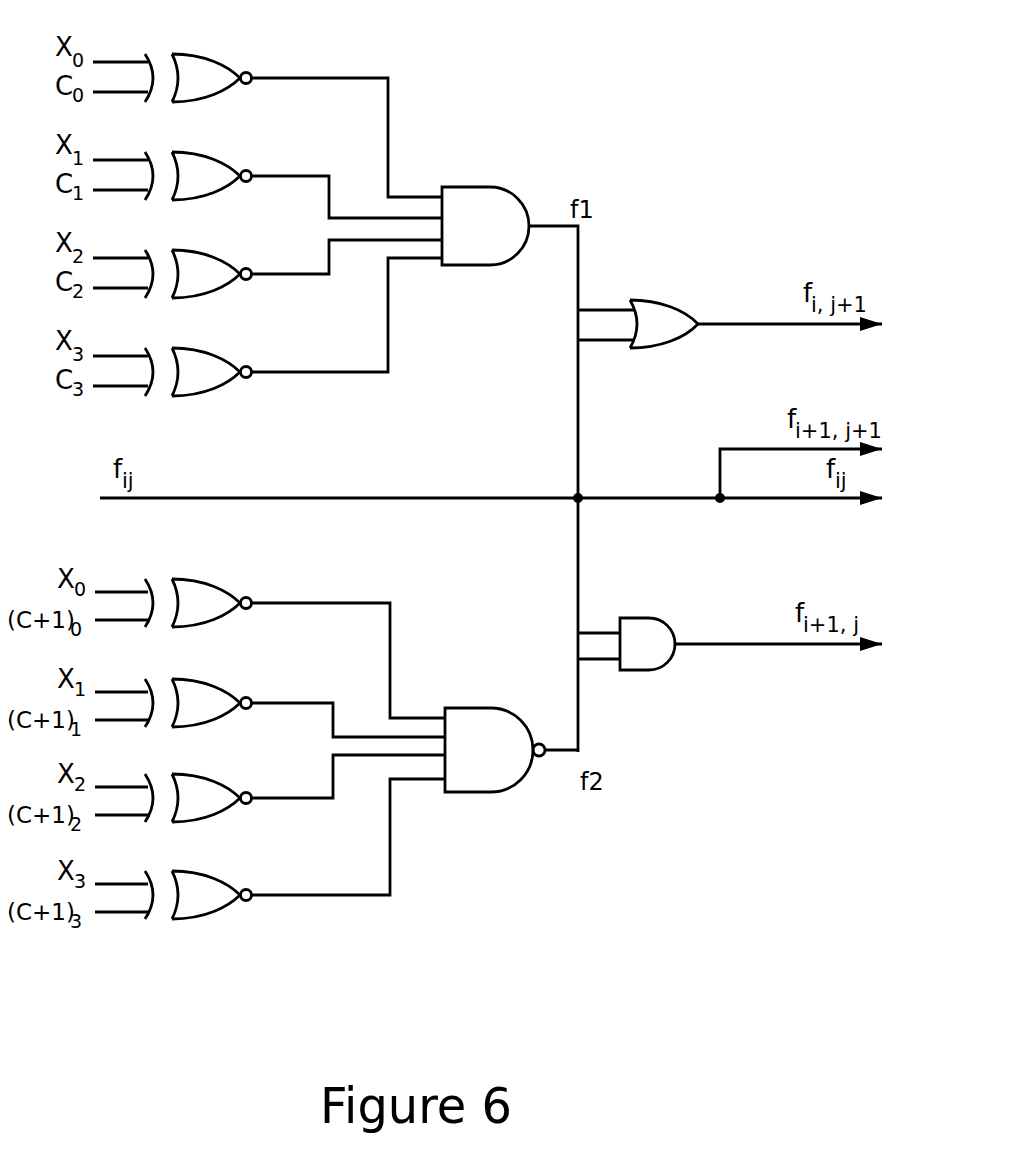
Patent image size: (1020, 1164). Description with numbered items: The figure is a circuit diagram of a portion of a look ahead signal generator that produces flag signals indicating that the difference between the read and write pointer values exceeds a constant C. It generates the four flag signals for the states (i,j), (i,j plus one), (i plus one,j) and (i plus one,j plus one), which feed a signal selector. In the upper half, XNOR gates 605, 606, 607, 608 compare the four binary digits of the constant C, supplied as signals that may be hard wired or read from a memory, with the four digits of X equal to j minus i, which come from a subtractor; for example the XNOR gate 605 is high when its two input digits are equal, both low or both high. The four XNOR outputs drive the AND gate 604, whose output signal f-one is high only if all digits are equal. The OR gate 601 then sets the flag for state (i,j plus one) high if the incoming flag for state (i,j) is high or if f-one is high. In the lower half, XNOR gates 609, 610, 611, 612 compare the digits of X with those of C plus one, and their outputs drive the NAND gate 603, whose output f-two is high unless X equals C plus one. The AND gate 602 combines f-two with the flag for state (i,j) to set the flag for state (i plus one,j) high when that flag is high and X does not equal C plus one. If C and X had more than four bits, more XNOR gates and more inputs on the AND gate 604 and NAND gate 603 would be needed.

The OR gate 601 is at (642, 300).
The AND gate 602 is at (635, 618).
The NAND gate 603 is at (463, 708).
The AND gate 604 is at (475, 187).
The XNOR gate 605 is at (193, 54).
The XNOR gate 606 is at (203, 152).
The XNOR gate 607 is at (203, 250).
The XNOR gate 608 is at (197, 348).
The XNOR gate 609 is at (193, 579).
The XNOR gate 610 is at (200, 679).
The XNOR gate 611 is at (205, 774).
The XNOR gate 612 is at (200, 871).